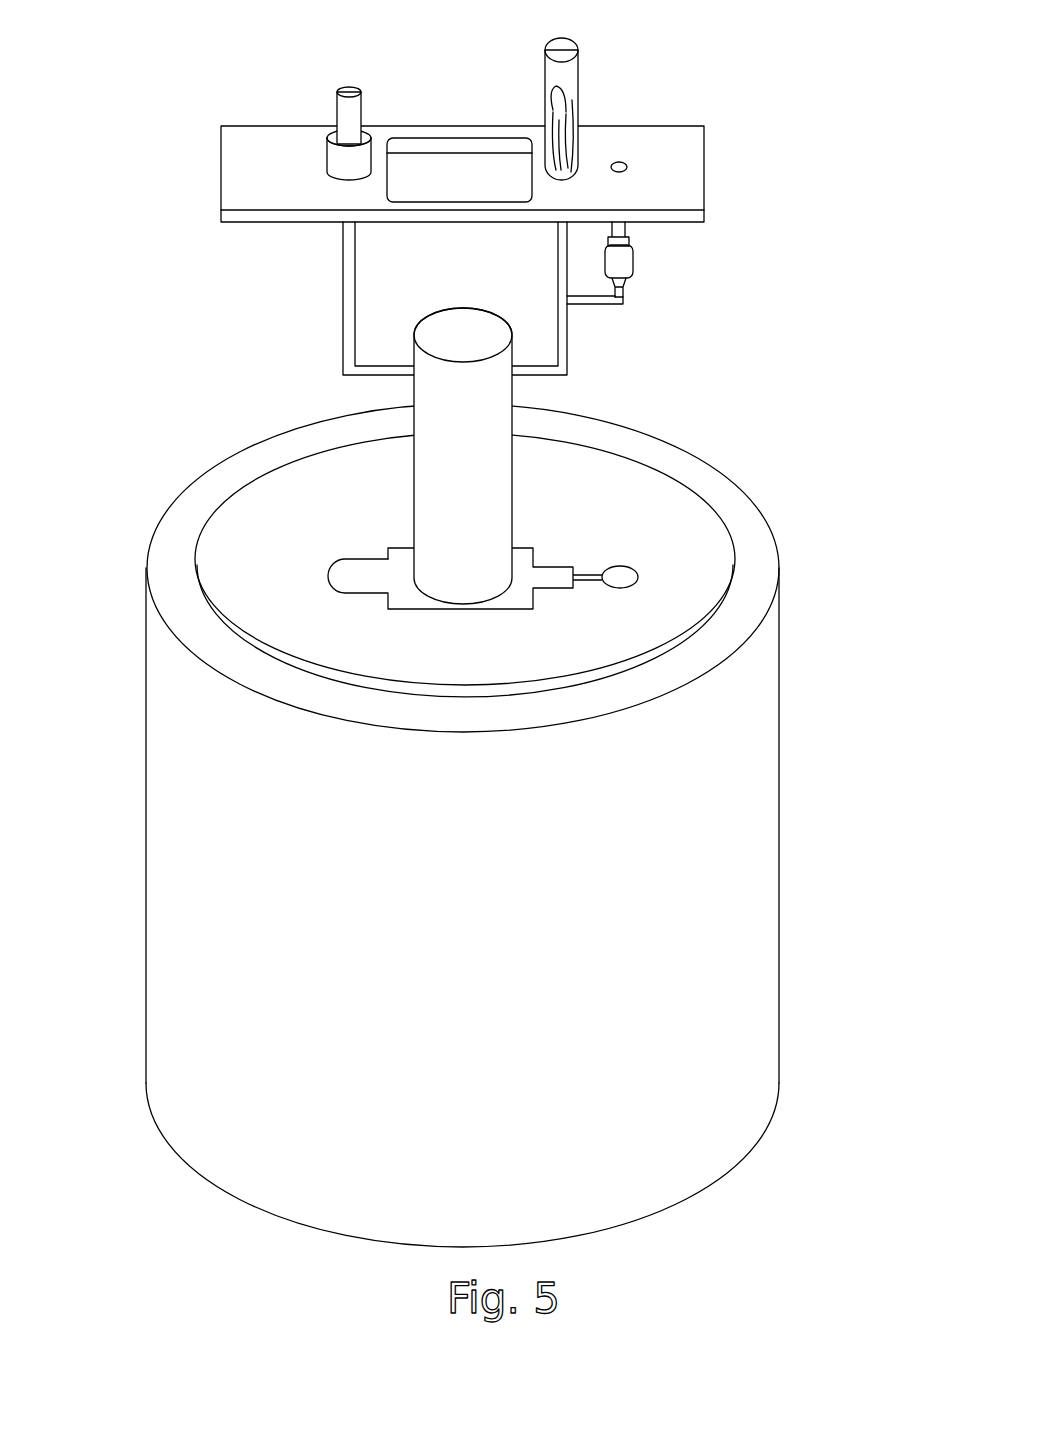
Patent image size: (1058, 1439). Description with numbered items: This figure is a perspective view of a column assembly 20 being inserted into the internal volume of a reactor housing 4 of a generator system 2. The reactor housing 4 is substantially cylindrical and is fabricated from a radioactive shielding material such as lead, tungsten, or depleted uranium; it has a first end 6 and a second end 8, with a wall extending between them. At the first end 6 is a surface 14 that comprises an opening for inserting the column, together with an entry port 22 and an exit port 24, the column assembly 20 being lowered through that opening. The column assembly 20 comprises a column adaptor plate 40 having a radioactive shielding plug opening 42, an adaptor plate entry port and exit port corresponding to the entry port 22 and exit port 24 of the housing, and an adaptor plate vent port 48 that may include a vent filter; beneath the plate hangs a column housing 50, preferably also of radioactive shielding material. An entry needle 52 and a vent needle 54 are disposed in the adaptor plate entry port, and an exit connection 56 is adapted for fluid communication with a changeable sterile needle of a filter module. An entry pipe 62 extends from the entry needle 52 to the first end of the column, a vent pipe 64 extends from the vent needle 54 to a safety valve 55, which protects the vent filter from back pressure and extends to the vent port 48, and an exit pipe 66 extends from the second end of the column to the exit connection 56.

The generator system 2 is at (842, 779).
The reactor housing 4 is at (781, 1002).
The first end 6 is at (146, 554).
The second end 8 is at (242, 1200).
The surface 14 is at (227, 480).
The column assembly 20 is at (700, 383).
The entry port 22 is at (575, 563).
The exit port 24 is at (333, 588).
The column adaptor plate 40 is at (220, 178).
The radioactive shielding plug opening 42 is at (458, 165).
The adaptor plate vent port 48 is at (621, 163).
The column housing 50 is at (515, 490).
The entry needle 52 is at (555, 128).
The vent needle 54 is at (565, 115).
The safety valve 55 is at (633, 265).
The exit connection 56 is at (333, 108).
The entry pipe 62 is at (568, 343).
The vent pipe 64 is at (600, 305).
The exit pipe 66 is at (343, 292).